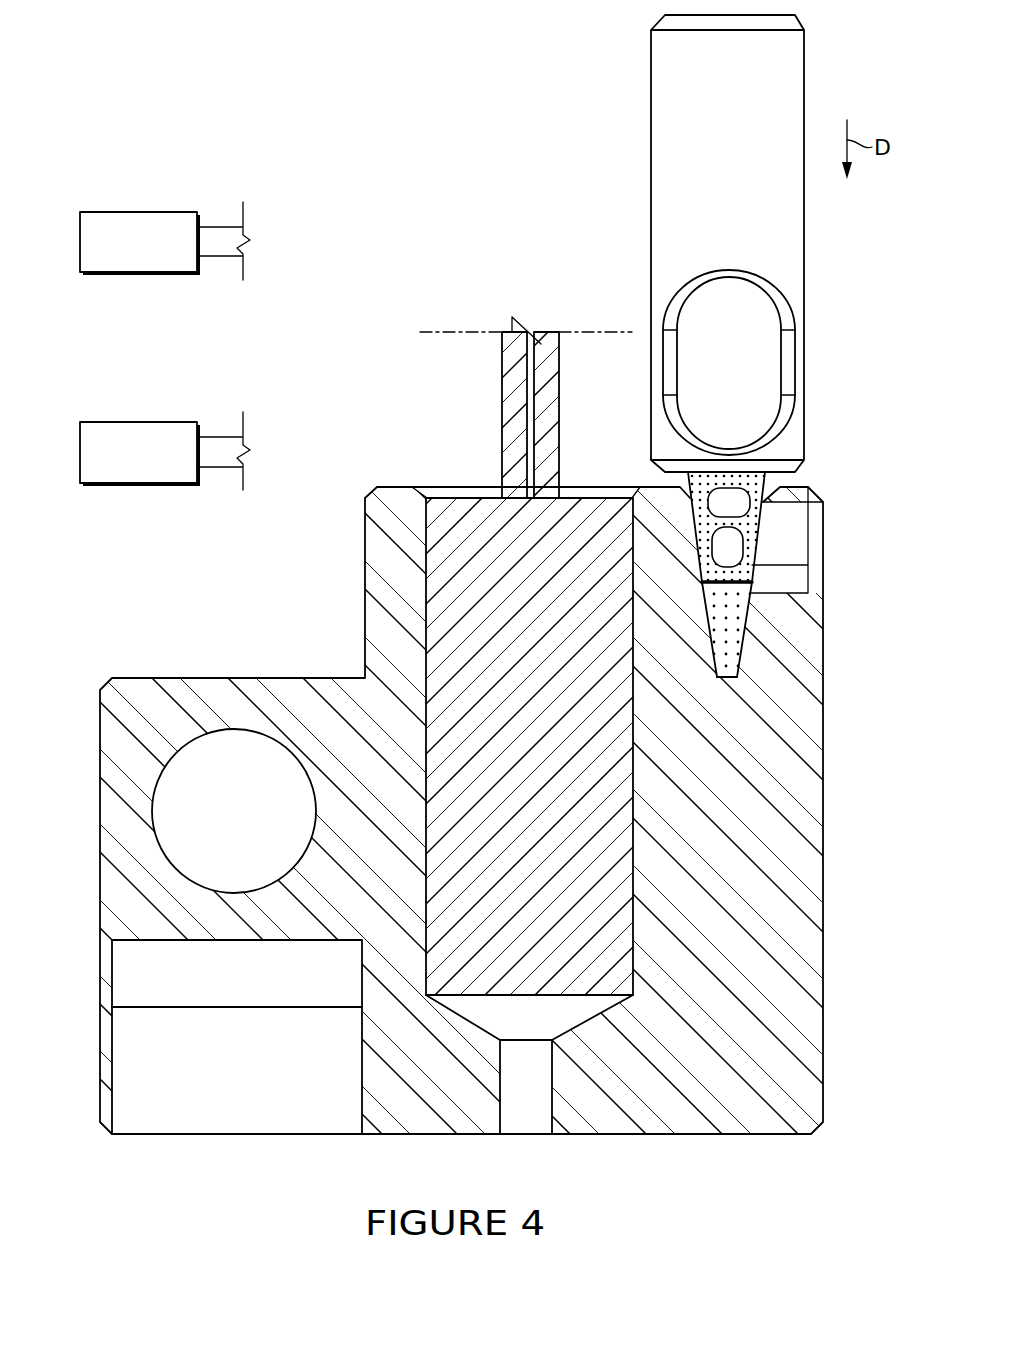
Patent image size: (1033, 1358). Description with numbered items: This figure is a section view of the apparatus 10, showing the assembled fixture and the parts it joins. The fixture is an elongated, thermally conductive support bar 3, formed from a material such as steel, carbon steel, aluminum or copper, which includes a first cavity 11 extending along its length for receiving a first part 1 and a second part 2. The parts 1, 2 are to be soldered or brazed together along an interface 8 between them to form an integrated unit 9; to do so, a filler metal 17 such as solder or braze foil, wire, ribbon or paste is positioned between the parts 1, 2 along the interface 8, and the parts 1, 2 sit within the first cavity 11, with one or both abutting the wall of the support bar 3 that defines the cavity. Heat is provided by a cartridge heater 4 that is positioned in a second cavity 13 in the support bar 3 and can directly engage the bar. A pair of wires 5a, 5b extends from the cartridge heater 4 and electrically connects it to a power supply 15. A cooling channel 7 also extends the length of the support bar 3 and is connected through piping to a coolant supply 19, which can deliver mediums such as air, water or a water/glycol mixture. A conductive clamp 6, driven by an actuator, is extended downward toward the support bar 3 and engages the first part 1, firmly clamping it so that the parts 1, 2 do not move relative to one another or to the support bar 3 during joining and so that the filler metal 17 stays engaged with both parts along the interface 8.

The first part 1 is at (774, 527).
The second part 2 is at (735, 626).
The support bar 3 is at (810, 870).
The cartridge heater 4 is at (620, 745).
The wire 5a is at (508, 418).
The wire 5b is at (548, 413).
The conductive clamp 6 is at (793, 245).
The cooling channel 7 is at (137, 812).
The interface 8 is at (748, 581).
The integrated unit 9 is at (772, 545).
The apparatus 10 is at (837, 474).
The first cavity 11 is at (756, 660).
The second cavity 13 is at (589, 1019).
The power supply 15 is at (80, 240).
The filler metal 17 is at (731, 589).
The coolant supply 19 is at (80, 452).